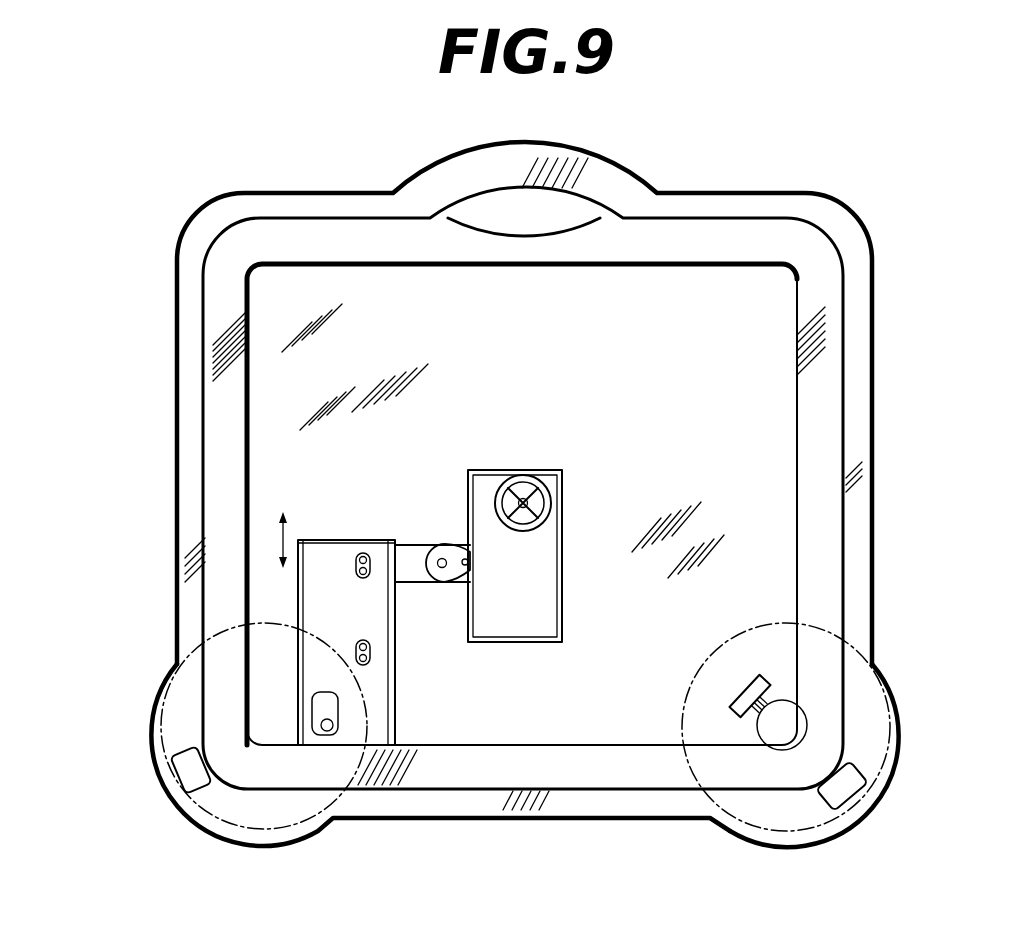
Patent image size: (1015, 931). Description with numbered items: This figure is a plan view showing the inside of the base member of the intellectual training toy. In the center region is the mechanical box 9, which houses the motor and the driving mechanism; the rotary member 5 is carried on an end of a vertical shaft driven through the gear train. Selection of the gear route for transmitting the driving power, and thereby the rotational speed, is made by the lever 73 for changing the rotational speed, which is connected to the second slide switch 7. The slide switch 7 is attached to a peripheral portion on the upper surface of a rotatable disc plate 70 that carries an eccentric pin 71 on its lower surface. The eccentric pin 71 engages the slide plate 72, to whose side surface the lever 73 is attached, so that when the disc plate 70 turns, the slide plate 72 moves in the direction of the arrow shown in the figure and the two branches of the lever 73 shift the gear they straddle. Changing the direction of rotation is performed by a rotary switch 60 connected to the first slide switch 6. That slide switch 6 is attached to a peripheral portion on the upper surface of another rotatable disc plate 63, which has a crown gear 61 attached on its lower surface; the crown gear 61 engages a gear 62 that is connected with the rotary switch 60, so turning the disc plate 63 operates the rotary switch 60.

The rotary member 5 is at (522, 480).
The first slide switch 6 is at (853, 763).
The second slide switch 7 is at (190, 775).
The mechanical box 9 is at (550, 532).
The rotary switch 60 is at (742, 690).
The crown gear 61 is at (807, 743).
The gear 62 is at (770, 697).
The rotatable disc plate 63 is at (873, 677).
The rotatable disc plate 70 is at (307, 822).
The eccentric pin 71 is at (340, 723).
The slide plate 72 is at (313, 588).
The lever for changing the rotational speed 73 is at (443, 548).